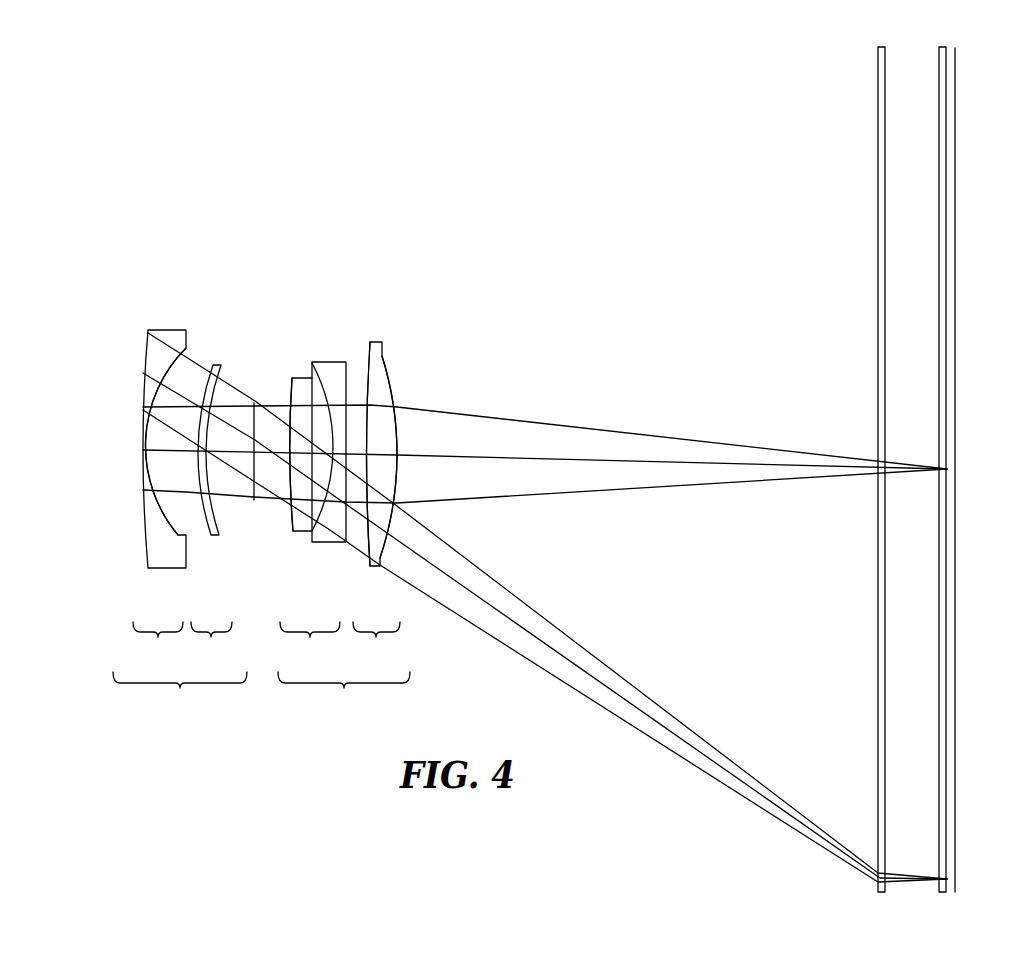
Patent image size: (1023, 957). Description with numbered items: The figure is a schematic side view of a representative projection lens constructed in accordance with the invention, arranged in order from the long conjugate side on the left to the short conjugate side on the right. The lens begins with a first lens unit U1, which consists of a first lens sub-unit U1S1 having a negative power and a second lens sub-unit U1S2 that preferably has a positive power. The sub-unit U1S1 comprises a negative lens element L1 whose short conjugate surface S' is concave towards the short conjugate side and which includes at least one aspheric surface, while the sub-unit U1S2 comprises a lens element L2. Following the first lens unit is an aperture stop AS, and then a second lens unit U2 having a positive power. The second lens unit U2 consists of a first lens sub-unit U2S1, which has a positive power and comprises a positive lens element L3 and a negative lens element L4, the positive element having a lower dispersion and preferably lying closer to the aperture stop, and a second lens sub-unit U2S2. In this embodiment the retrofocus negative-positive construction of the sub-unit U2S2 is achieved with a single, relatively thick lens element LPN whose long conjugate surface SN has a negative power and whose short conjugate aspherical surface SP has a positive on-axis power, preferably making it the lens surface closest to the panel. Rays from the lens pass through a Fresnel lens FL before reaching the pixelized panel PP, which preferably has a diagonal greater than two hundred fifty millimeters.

The negative lens element L1 is at (164, 333).
The lens element of second lens sub-unit L2 is at (216, 364).
The positive lens element L3 is at (296, 394).
The negative lens element L4 is at (328, 365).
The lens element LPN is at (386, 390).
The aperture stop AS is at (252, 490).
The short conjugate surface S' is at (182, 460).
The first optical surface SN is at (367, 356).
The second optical surface SP is at (395, 487).
The Fresnel lens FL is at (878, 652).
The pixelized panel PP is at (957, 595).
The first lens sub-unit U1S1 is at (149, 643).
The second lens sub-unit U1S2 is at (217, 643).
The first lens sub-unit U2S1 is at (310, 643).
The second lens sub-unit U2S2 is at (377, 643).
The first lens unit U1 is at (180, 692).
The second lens unit U2 is at (344, 692).